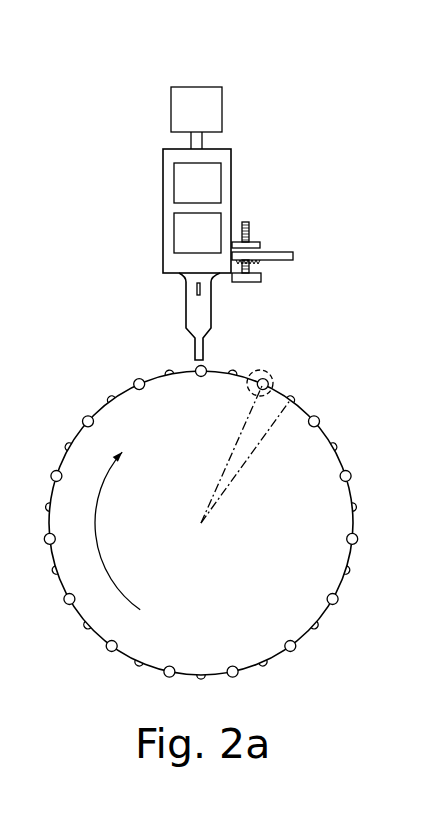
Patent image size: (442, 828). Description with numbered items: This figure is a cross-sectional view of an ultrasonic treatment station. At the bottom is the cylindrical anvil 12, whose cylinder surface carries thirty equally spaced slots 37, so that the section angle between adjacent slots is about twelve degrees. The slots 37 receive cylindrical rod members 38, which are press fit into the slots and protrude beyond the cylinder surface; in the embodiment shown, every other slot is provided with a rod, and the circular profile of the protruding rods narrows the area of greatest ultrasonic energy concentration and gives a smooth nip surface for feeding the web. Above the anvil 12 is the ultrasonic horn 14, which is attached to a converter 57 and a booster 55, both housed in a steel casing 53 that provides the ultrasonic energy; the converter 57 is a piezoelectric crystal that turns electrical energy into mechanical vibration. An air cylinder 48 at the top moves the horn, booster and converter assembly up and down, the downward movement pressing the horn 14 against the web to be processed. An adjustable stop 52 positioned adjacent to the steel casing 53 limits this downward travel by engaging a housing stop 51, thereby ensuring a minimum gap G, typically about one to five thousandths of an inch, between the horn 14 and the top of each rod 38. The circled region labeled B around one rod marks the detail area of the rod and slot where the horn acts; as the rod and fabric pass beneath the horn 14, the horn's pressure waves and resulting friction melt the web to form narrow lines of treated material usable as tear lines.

The air cylinder 48 is at (202, 87).
The steel casing 53 is at (168, 150).
The converter 57 is at (208, 192).
The booster 55 is at (208, 242).
The housing stop 51 is at (233, 240).
The adjustable stop 52 is at (258, 241).
The ultrasonic horn 14 is at (187, 305).
The gap G is at (212, 357).
The reference ball B is at (272, 375).
The rod members 38 is at (319, 421).
The slots 37 is at (337, 604).
The anvil 12 is at (108, 660).